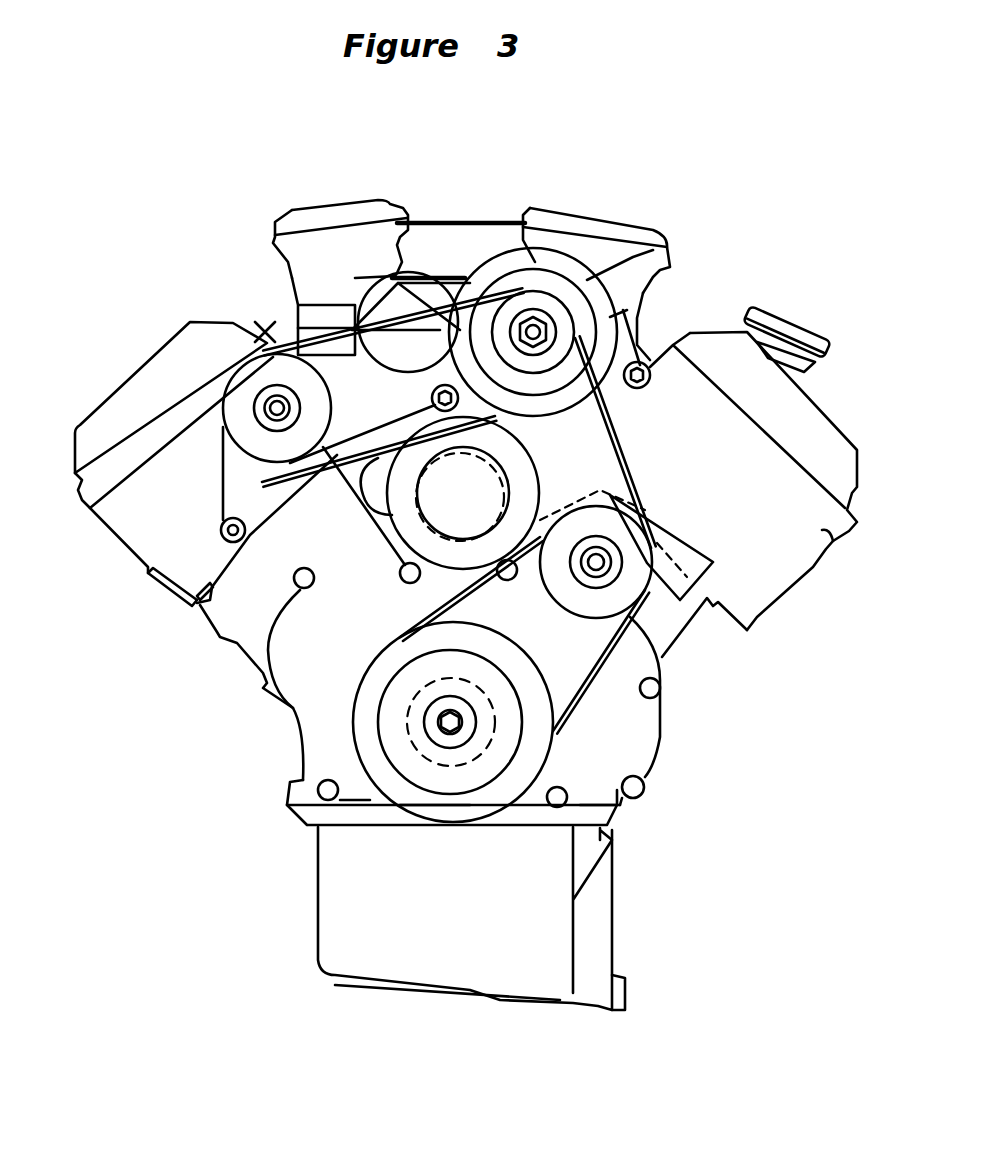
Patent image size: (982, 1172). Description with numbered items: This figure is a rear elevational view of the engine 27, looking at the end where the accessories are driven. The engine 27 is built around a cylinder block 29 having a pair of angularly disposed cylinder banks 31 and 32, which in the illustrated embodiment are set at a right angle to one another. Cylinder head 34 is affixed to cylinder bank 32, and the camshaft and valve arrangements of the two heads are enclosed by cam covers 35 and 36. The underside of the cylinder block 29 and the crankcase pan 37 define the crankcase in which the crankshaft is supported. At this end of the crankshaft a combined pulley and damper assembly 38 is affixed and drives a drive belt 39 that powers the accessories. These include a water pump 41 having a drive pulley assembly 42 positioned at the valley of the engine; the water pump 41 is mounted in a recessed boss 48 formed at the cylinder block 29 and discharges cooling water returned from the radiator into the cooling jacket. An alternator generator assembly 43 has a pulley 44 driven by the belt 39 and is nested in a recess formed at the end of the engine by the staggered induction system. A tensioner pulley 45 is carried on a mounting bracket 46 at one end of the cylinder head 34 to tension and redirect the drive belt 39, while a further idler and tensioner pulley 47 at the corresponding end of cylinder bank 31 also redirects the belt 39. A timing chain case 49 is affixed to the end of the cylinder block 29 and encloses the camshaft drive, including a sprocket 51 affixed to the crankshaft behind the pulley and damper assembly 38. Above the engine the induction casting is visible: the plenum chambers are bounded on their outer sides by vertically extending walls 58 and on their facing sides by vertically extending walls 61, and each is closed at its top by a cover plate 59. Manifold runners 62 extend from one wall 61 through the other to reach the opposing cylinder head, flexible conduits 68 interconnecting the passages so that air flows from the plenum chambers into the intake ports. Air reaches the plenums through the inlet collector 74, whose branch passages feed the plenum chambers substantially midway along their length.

The engine 27 is at (228, 757).
The cylinder block 29 is at (663, 765).
The cylinder bank 31 is at (680, 620).
The cylinder bank 32 is at (232, 638).
The cylinder head 34 is at (123, 502).
The cam cover 35 is at (827, 437).
The cam cover 36 is at (160, 359).
The crankcase pan 37 is at (318, 872).
The combined pulley and damper assembly 38 is at (467, 780).
The drive belt 39 is at (578, 699).
The water pump 41 is at (334, 487).
The drive pulley assembly 42 is at (392, 568).
The alternator generator assembly 43 is at (640, 245).
The pulley 44 is at (508, 300).
The tensioner pulley 45 is at (237, 415).
The mounting bracket 46 is at (237, 485).
The idler and tensioner pulley 47 is at (640, 542).
The recessed boss 48 is at (420, 412).
The timing chain case 49 is at (647, 662).
The sprocket 51 is at (498, 674).
The vertically extending wall 58 is at (296, 285).
The cover plate 59 is at (290, 230).
The vertically extending wall 61 is at (415, 226).
The manifold runner 62 is at (462, 232).
The flexible conduit 68 is at (262, 343).
The inlet collector 74 is at (387, 306).